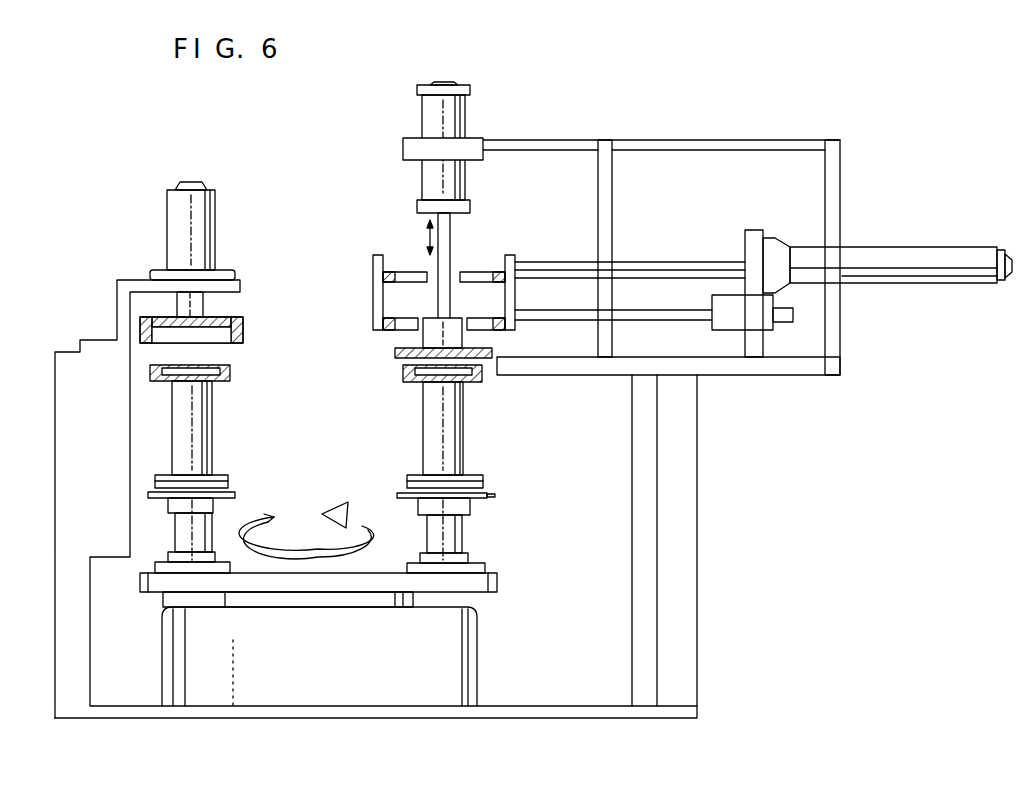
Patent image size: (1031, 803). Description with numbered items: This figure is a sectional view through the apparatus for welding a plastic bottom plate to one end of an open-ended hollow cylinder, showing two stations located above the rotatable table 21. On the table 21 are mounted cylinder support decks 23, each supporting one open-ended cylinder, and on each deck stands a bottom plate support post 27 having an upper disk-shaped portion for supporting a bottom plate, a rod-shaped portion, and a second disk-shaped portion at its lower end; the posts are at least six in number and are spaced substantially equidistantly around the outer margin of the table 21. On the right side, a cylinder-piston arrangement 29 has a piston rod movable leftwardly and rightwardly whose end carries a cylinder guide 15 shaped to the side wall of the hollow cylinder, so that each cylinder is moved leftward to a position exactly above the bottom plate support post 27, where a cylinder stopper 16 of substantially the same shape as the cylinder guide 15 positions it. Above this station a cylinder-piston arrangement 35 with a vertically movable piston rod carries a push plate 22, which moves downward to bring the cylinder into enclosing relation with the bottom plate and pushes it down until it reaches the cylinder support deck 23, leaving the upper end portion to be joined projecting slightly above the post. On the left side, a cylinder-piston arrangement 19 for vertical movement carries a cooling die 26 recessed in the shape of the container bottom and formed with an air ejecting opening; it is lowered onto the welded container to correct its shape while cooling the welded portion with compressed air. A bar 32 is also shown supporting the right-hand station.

The cylinder guide 15 is at (477, 268).
The cylinder stopper 16 is at (407, 268).
The cylinder-piston arrangement 19 is at (216, 222).
The rotatable table 21 is at (497, 585).
The push plate 22 is at (493, 360).
The cylinder support deck 23 is at (235, 496).
The cooling die 26 is at (243, 335).
The bottom plate support post 27 is at (242, 366).
The cylinder-piston arrangement 29 is at (917, 253).
The support bar 32 is at (565, 376).
The cylinder-piston arrangement 35 is at (457, 118).